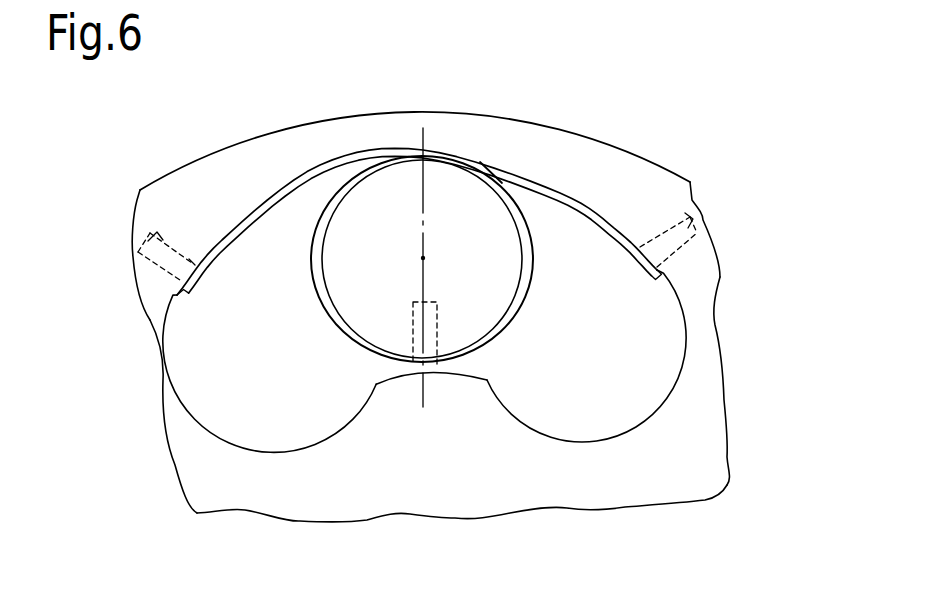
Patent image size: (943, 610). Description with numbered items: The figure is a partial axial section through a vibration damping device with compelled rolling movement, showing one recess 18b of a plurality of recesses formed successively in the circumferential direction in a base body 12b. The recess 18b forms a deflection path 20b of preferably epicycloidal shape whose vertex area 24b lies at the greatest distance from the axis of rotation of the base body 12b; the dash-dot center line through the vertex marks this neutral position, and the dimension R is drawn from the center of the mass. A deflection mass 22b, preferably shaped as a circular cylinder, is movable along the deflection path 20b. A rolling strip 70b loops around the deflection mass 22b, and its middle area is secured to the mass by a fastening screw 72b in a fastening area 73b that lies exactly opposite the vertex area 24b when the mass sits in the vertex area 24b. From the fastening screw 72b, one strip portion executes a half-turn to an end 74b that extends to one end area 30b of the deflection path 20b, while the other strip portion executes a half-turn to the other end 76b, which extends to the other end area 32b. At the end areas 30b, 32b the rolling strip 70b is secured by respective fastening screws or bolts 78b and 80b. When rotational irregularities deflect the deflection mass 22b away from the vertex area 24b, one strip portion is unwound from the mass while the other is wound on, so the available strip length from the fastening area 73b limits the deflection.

The base body 12b is at (618, 170).
The recess 18b is at (660, 357).
The deflection path 20b is at (295, 180).
The deflection mass 22b is at (457, 182).
The vertex area 24b is at (415, 146).
The end area of the deflection path 30b is at (680, 297).
The other end area of the deflection path 32b is at (165, 353).
The rolling strip 70b is at (500, 178).
The fastening screw 72b is at (413, 327).
The fastening area 73b is at (465, 362).
The end of the rolling strip 74b is at (655, 220).
The other end of the rolling strip 76b is at (240, 213).
The fastening screw 78b is at (702, 222).
The fastening screw 80b is at (140, 245).
The radius R is at (423, 258).